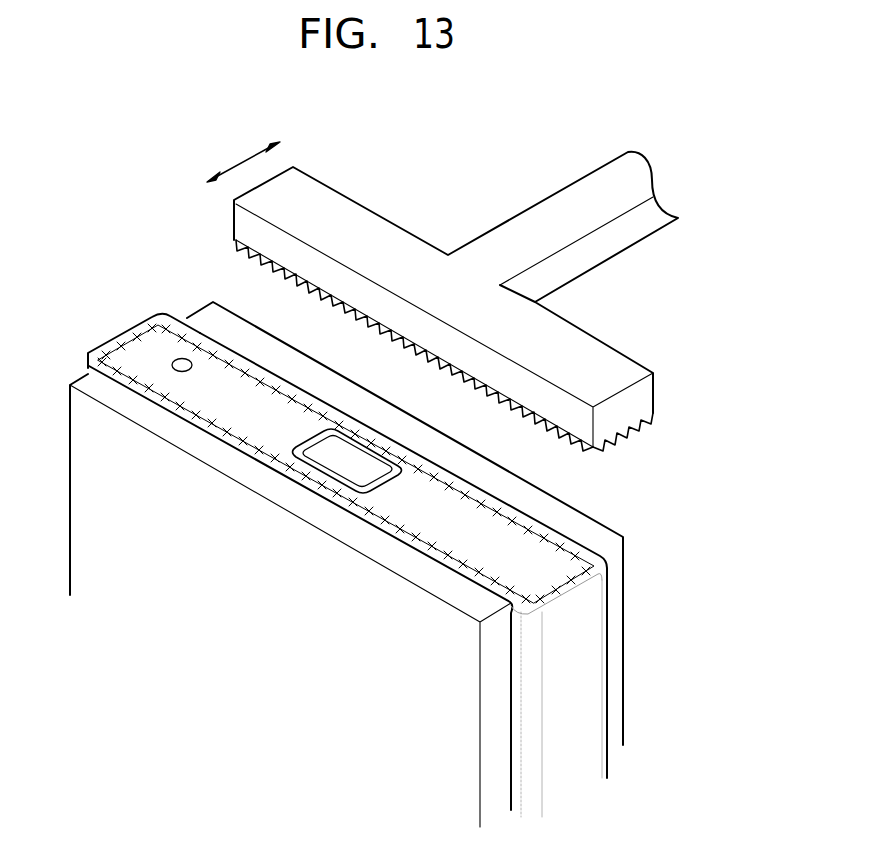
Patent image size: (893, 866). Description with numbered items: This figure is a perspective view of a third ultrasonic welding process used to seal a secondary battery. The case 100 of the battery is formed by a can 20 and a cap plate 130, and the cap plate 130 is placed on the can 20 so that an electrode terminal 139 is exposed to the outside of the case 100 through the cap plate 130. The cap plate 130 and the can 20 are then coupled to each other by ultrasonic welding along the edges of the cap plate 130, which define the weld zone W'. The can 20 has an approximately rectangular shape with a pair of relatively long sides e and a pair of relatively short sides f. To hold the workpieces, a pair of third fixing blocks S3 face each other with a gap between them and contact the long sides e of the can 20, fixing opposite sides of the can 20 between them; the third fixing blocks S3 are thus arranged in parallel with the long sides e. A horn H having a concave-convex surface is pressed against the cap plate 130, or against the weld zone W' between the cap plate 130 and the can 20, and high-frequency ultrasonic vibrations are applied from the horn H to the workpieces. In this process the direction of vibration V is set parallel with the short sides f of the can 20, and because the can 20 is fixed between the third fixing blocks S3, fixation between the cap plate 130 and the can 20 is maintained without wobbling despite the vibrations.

The direction of vibration V is at (243, 158).
The horn H is at (367, 217).
The short sides f is at (122, 330).
The weld zone W' is at (346, 423).
The long sides e is at (228, 442).
The electrode terminal 139 is at (342, 465).
The third fixing blocks S3 is at (621, 557).
The cap plate 130 is at (568, 583).
The can 20 is at (593, 673).
The case 100 is at (725, 613).